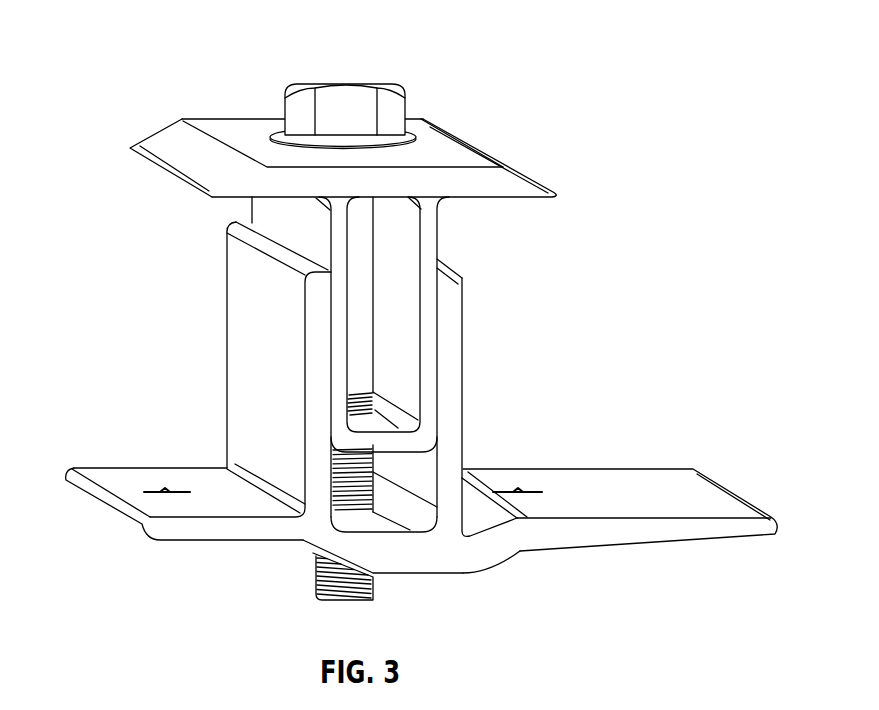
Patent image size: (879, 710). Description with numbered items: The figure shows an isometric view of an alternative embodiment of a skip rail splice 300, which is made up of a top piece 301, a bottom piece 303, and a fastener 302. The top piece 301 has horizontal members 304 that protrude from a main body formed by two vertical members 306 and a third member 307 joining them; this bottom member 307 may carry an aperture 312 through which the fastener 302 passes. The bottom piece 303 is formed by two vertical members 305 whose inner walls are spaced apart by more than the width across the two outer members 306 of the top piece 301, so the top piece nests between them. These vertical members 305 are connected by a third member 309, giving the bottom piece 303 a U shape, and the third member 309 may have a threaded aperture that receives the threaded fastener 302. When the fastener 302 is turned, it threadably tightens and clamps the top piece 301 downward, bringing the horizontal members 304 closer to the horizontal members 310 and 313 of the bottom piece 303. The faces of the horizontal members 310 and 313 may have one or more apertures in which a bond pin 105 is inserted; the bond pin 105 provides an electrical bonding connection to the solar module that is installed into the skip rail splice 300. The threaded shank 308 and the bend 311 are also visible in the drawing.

The skip rail splice 300 is at (671, 45).
The top piece 301 is at (182, 152).
The fastener 302 is at (412, 103).
The bottom piece 303 is at (460, 282).
The horizontal members 304 is at (288, 207).
The vertical members 305 is at (313, 340).
The vertical members 306 is at (346, 380).
The third member 307 is at (397, 430).
The threaded shaft 308 is at (380, 499).
The third member 309 is at (414, 578).
The horizontal member 310 is at (225, 546).
The bend 311 is at (499, 533).
The aperture 312 is at (389, 394).
The horizontal member 313 is at (718, 537).
The bond pin 105 is at (136, 492).